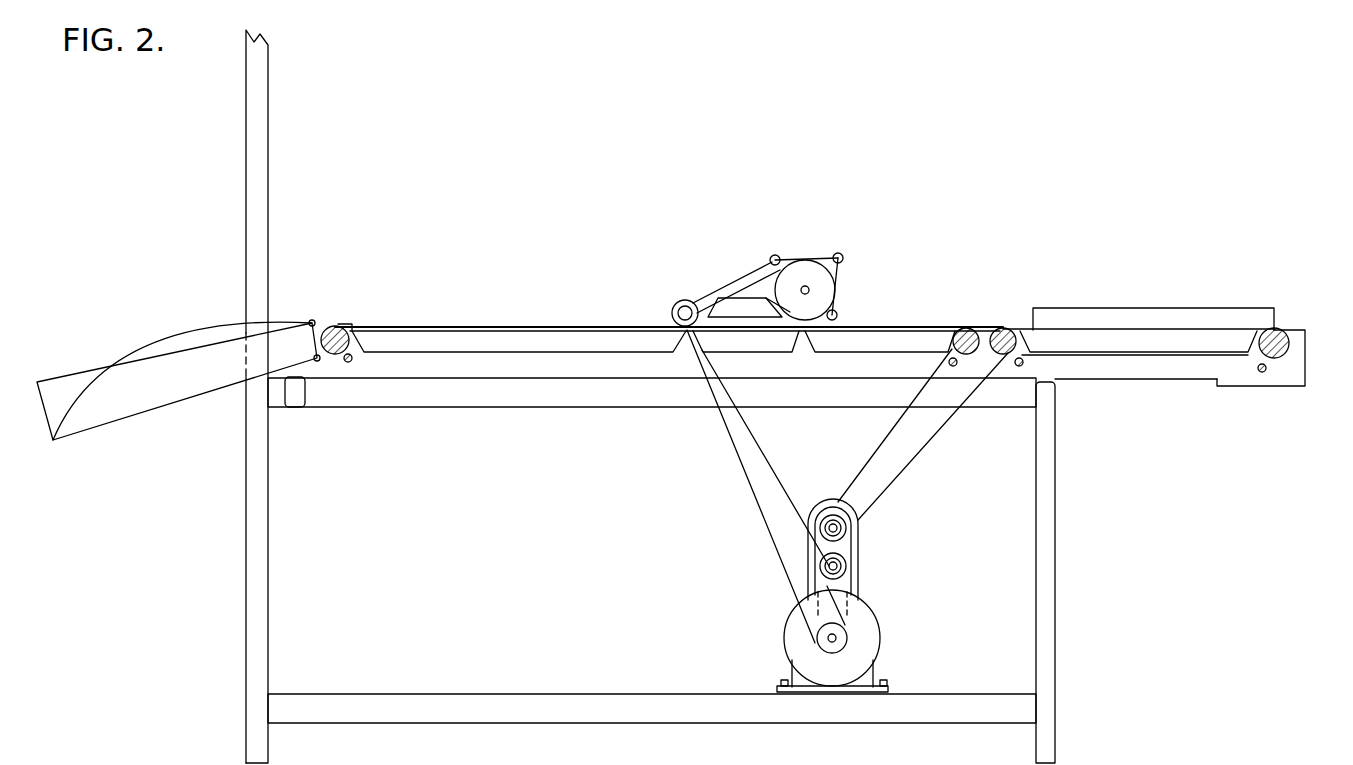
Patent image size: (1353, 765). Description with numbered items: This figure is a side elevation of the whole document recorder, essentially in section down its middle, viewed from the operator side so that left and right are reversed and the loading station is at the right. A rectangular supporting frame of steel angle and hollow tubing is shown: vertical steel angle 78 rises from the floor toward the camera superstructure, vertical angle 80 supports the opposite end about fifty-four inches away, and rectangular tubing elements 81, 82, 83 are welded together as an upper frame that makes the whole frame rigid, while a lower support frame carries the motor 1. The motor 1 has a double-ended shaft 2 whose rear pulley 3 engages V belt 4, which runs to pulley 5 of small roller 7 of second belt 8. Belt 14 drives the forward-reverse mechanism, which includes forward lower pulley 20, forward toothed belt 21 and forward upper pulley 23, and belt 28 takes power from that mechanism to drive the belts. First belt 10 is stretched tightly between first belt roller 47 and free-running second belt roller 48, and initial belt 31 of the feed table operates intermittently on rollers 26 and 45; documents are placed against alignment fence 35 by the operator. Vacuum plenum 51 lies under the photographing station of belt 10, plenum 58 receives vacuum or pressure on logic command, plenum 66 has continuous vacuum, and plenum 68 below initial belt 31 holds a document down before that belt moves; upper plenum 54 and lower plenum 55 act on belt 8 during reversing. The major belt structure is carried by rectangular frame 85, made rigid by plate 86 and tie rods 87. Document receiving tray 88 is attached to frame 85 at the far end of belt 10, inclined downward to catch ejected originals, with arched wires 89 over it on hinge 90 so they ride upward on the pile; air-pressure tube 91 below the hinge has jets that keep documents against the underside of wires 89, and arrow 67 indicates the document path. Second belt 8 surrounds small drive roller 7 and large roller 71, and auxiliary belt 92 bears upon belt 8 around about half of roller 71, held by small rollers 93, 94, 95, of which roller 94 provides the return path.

The motor 1 is at (861, 652).
The double-ended shaft 2 is at (832, 643).
The pulley 3 is at (822, 647).
The V belt 4 is at (748, 492).
The pulley 5 is at (672, 312).
The small roller 7 is at (684, 305).
The second belt 8 is at (702, 304).
The first belt 10 is at (569, 327).
The belt 14 is at (856, 618).
The forward lower pulley 20 is at (850, 566).
The forward toothed belt 21 is at (858, 539).
The forward upper pulley 23 is at (828, 516).
The roller 26 is at (1282, 334).
The belt 28 is at (905, 488).
The initial belt 31 is at (1023, 330).
The alignment fence 35 is at (1202, 320).
The roller 45 is at (991, 329).
The first belt roller 47 is at (957, 330).
The second belt roller 48 is at (345, 328).
The plenum 51 is at (430, 334).
The upper plenum 54 is at (755, 287).
The lower plenum 55 is at (724, 308).
The plenum 58 is at (890, 352).
The plenum 66 is at (757, 352).
The feed direction arrow 67 is at (493, 298).
The plenum 68 is at (1186, 352).
The large roller 71 is at (810, 272).
The vertical steel angle 78 is at (246, 617).
The vertical angle 80 is at (1055, 620).
The rectangular tubing element 81 is at (588, 393).
The rectangular tubing element 82 is at (296, 398).
The rectangular tubing element 83 is at (1038, 392).
The rectangular frame 85 is at (1126, 380).
The plate 86 is at (1270, 386).
The tie rod 87 is at (351, 362).
The document receiving tray 88 is at (137, 399).
The wires 89 is at (150, 350).
The hinge 90 is at (313, 319).
The air-pressure tube 91 is at (313, 357).
The auxiliary belt 92 is at (838, 285).
The roller 93 is at (838, 314).
The roller 94 is at (843, 257).
The roller 95 is at (780, 256).